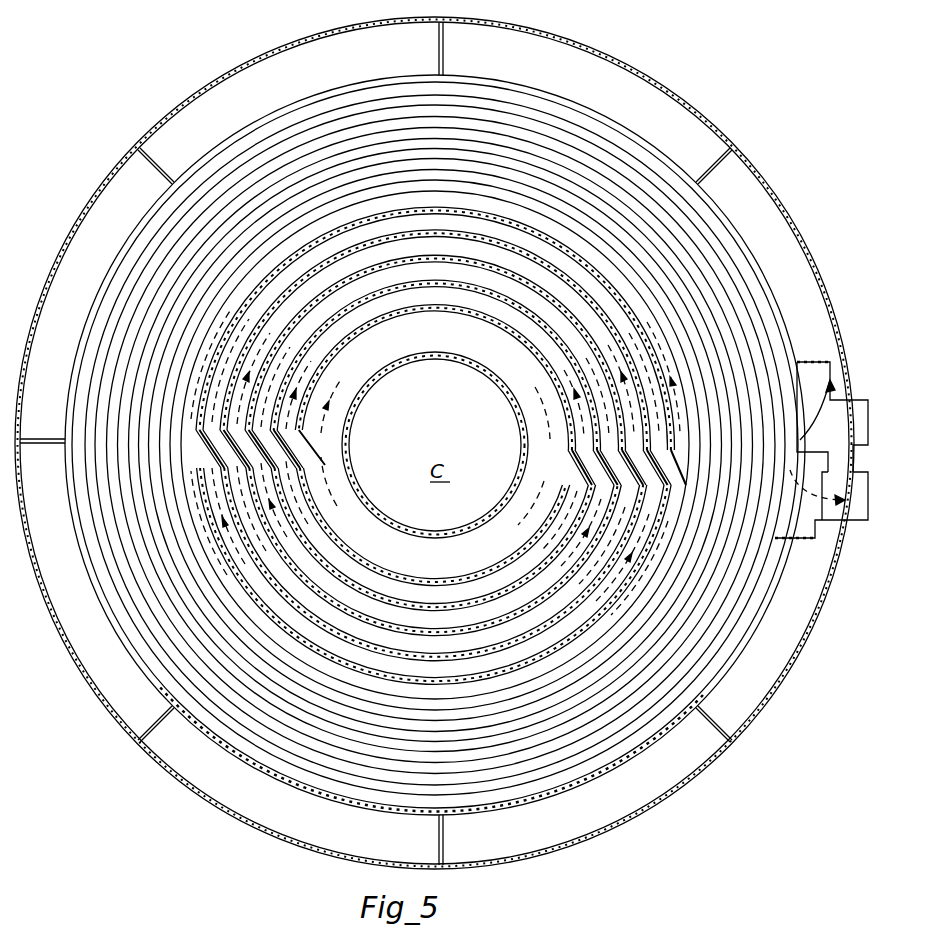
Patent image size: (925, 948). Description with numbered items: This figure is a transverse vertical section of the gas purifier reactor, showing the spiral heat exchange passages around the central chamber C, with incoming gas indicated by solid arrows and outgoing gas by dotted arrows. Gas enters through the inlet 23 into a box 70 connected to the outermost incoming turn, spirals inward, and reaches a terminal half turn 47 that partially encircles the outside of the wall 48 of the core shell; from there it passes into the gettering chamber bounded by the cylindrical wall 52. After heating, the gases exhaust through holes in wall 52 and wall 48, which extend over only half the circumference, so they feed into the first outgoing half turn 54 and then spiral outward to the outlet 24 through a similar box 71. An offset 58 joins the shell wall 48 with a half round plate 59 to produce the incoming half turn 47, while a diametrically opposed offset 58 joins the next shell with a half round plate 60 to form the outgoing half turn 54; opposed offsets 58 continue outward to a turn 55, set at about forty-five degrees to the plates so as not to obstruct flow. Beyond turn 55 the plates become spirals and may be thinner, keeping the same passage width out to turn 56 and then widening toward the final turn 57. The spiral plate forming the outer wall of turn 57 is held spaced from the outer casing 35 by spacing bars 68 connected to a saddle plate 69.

The inlet 23 is at (838, 400).
The outlet 24 is at (835, 520).
The outer casing 35 is at (774, 693).
The terminal half turn 47 is at (510, 578).
The wall of core shell 48 is at (380, 546).
The cylindrical wall of chamber 52 is at (483, 610).
The half turn for outgoing gas 54 is at (392, 304).
The turn 55 is at (395, 690).
The turn 56 is at (580, 650).
The final turn 57 is at (126, 633).
The offset 58 is at (282, 440).
The half round plate 59 is at (435, 445).
The half round plate 60 is at (300, 357).
The spacing bars 68 is at (440, 44).
The saddle plate 69 is at (540, 800).
The box 70 is at (806, 364).
The box 71 is at (808, 548).